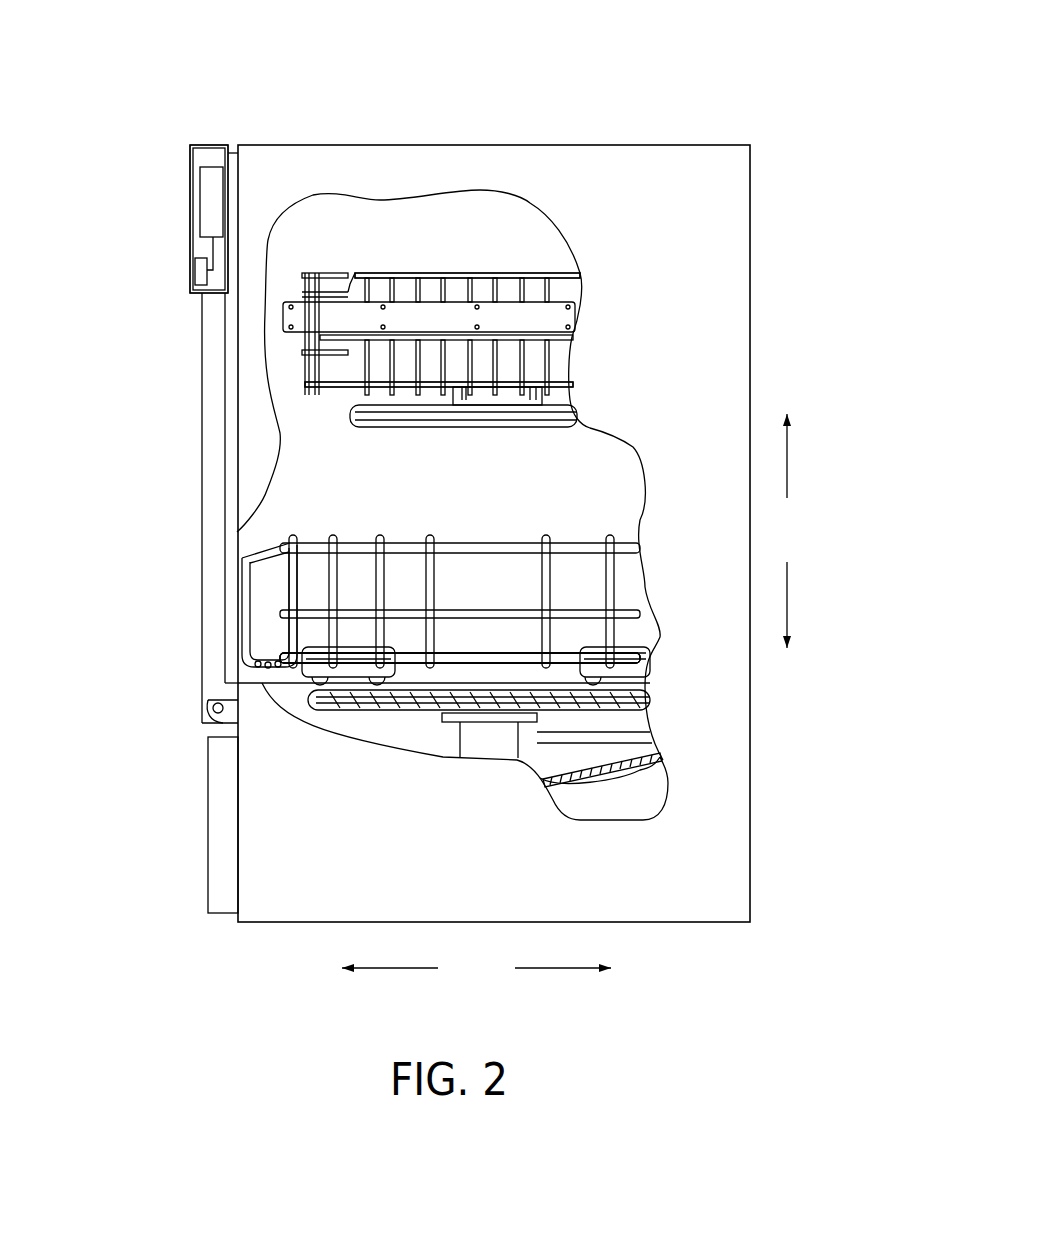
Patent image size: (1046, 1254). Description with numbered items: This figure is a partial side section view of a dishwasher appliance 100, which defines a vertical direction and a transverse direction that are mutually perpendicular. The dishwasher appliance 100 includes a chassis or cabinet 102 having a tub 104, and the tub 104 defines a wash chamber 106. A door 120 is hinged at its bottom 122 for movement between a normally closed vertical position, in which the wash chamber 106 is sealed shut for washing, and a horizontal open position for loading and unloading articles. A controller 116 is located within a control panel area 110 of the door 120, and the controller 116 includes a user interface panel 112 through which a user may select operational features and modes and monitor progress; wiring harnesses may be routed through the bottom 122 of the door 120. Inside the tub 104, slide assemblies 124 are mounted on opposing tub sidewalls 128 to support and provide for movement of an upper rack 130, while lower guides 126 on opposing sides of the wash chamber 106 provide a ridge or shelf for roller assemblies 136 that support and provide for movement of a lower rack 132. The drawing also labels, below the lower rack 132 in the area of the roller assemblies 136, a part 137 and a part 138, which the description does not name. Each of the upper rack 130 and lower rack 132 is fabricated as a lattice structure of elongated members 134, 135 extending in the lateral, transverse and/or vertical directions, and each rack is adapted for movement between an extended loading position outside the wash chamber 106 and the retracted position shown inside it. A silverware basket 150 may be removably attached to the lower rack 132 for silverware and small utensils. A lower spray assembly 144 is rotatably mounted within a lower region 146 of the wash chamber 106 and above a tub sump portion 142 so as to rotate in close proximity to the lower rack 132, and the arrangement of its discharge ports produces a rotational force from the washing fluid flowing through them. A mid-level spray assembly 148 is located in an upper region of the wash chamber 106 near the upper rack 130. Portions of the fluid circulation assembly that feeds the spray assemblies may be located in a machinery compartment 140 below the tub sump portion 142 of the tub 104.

The dishwasher appliance 100 is at (634, 130).
The cabinet 102 is at (687, 267).
The tub 104 is at (577, 805).
The wash chamber 106 is at (431, 514).
The control panel area 110 is at (170, 204).
The user interface panel 112 is at (194, 267).
The controller 116 is at (213, 182).
The door 120 is at (210, 440).
The bottom 122 is at (198, 715).
The slide assemblies 124 is at (452, 310).
The lower guides 126 is at (295, 684).
The tub sidewalls 128 is at (312, 222).
The upper rack 130 is at (540, 268).
The lower rack 132 is at (471, 540).
The elongated members 134 is at (335, 392).
The elongated members 135 is at (500, 277).
The roller assemblies 136 is at (322, 684).
The roller housing 137 is at (374, 674).
The rack bottom wire 138 is at (352, 667).
The machinery compartment 140 is at (631, 803).
The tub sump portion 142 is at (660, 757).
The lower spray assembly 144 is at (422, 728).
The lower region 146 is at (547, 678).
The mid-level spray assembly 148 is at (492, 440).
The silverware basket 150 is at (265, 612).